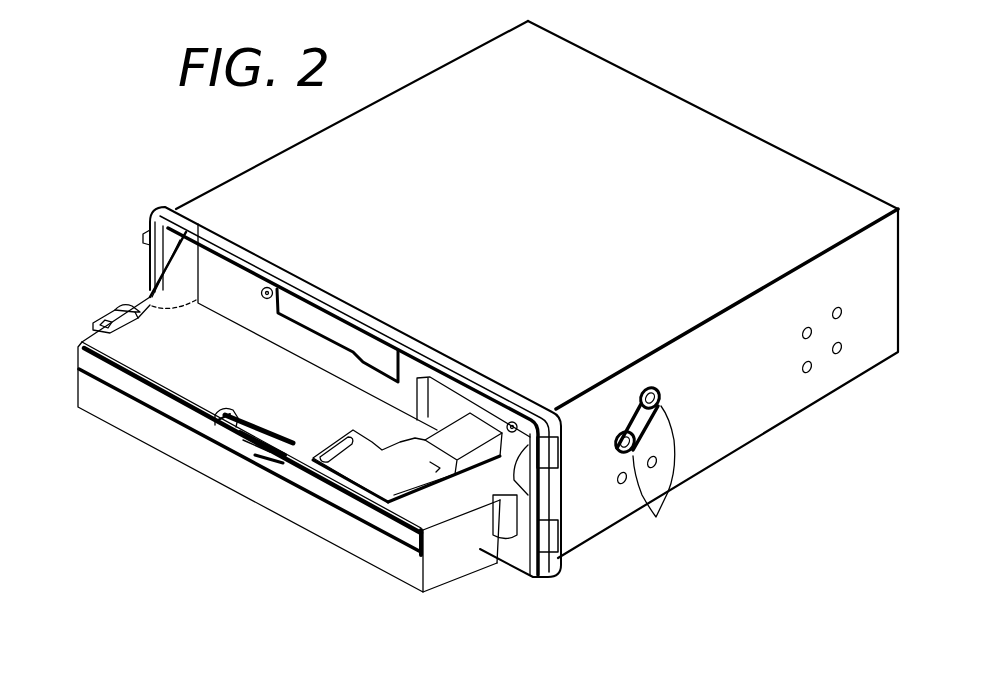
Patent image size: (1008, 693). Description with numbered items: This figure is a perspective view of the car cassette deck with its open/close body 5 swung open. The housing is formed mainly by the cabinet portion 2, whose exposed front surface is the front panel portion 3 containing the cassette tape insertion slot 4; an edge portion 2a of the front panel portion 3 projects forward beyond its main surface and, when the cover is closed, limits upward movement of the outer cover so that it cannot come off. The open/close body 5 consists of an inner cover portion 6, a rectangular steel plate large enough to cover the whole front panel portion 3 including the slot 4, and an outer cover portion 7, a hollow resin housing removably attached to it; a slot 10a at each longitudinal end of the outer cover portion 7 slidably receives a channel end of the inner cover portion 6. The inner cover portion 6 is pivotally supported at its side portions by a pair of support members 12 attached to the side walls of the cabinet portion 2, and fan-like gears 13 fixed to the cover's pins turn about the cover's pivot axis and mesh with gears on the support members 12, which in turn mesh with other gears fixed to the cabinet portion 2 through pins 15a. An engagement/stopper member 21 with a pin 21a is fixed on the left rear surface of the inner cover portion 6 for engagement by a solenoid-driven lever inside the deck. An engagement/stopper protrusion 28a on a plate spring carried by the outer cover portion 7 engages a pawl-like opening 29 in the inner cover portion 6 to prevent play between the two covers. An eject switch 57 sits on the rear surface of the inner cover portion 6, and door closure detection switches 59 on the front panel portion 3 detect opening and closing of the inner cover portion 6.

The cabinet portion 2 is at (683, 115).
The edge portion 2a is at (453, 367).
The front panel portion 3 is at (413, 372).
The cassette tape insertion slot 4 is at (337, 327).
The open/close body 5 is at (74, 402).
The inner cover portion 6 is at (450, 505).
The outer cover portion 7 is at (100, 405).
The slot 10a is at (427, 550).
The support member 12 is at (146, 240).
The fan-like gear 13 is at (150, 291).
The pin 15a is at (647, 478).
The engagement/stopper member 21 is at (128, 308).
The pin 21a is at (100, 323).
The engagement/stopper protrusion 28a is at (253, 455).
The pawl-like opening 29 is at (233, 428).
The eject switch 57 is at (327, 473).
The door closure detection switch 59 is at (263, 287).